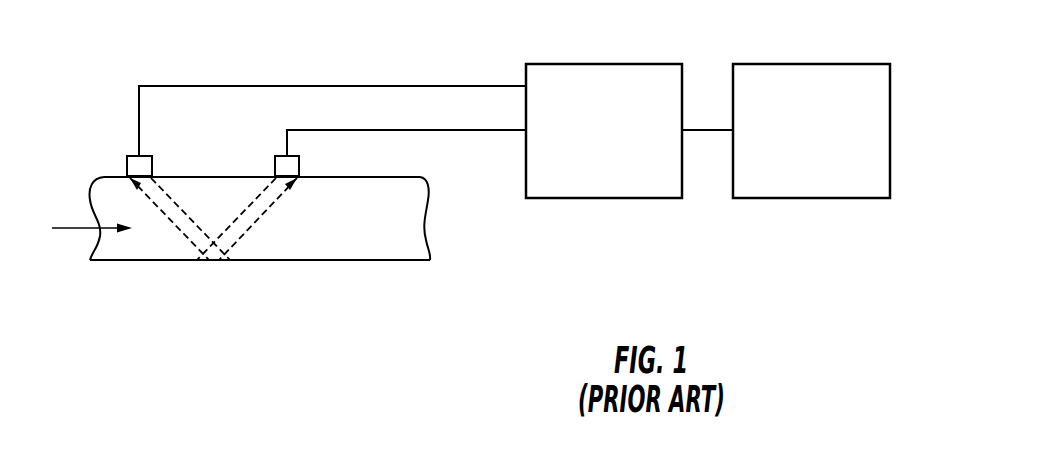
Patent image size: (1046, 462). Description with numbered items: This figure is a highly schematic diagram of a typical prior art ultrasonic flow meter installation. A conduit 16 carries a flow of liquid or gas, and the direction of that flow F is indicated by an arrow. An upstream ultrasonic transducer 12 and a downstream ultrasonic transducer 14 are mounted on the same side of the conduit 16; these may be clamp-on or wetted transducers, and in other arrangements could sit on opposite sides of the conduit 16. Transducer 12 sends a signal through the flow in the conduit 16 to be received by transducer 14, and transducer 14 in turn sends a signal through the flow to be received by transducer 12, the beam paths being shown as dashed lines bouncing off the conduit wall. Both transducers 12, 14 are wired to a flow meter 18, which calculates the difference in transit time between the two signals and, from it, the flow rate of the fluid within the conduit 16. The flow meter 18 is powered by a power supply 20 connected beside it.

The upstream ultrasonic transducer 12 is at (146, 156).
The downstream ultrasonic transducer 14 is at (274, 168).
The conduit 16 is at (333, 260).
The flow meter 18 is at (572, 198).
The power supply 20 is at (890, 127).
The fluid flow direction F is at (92, 213).